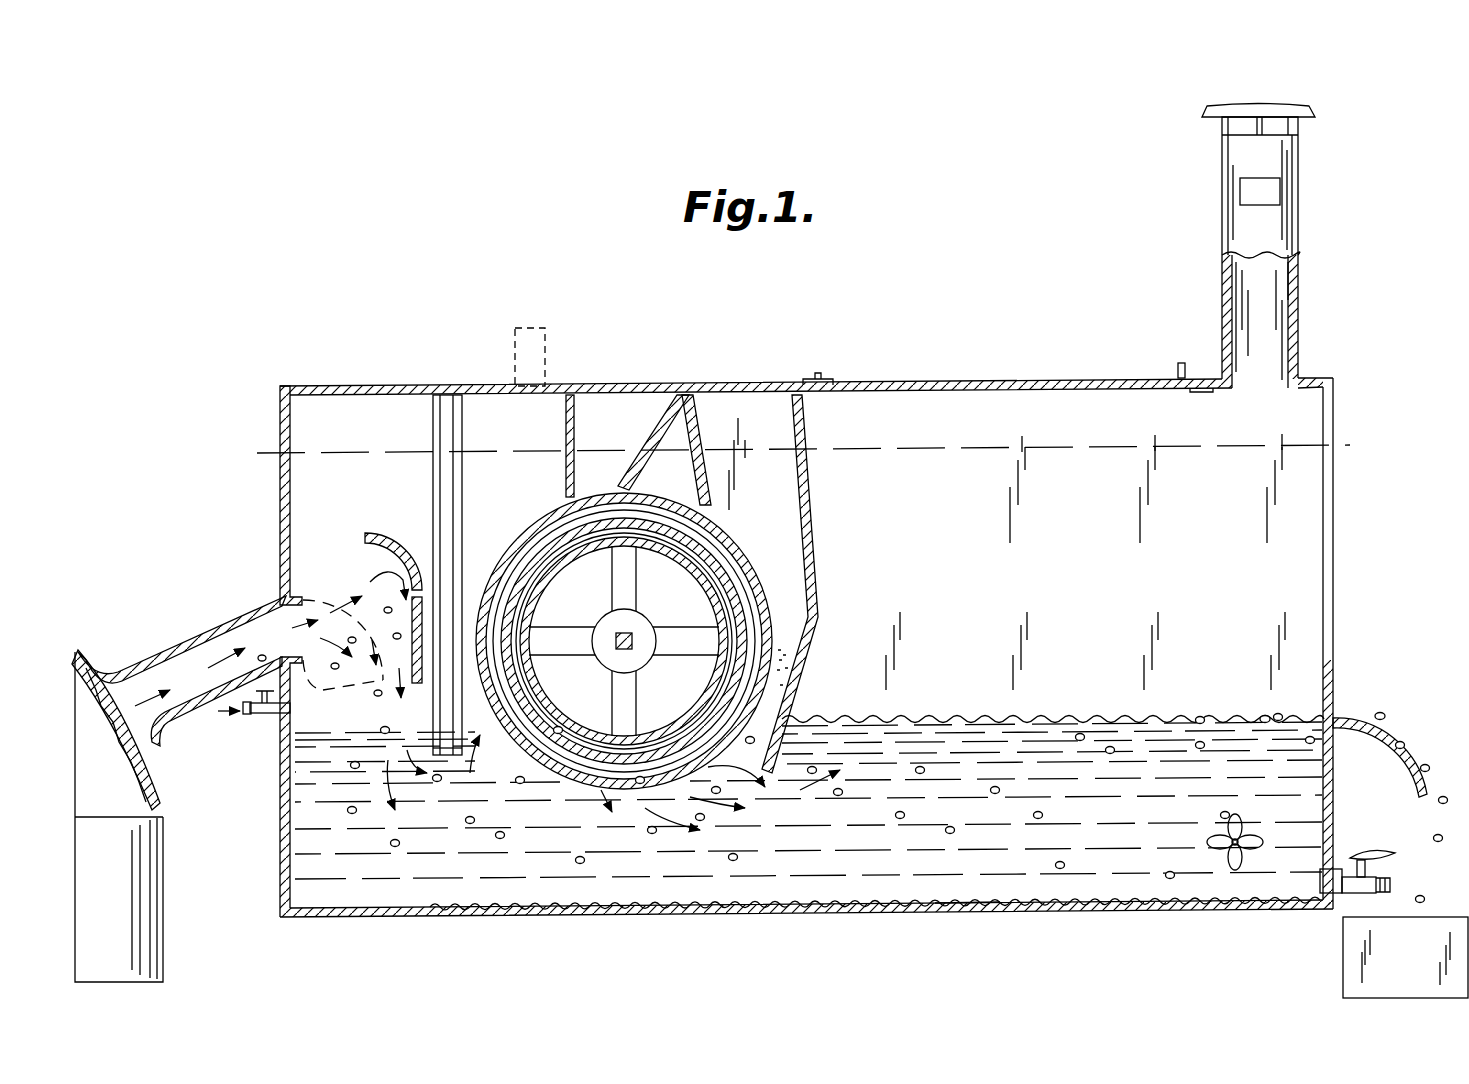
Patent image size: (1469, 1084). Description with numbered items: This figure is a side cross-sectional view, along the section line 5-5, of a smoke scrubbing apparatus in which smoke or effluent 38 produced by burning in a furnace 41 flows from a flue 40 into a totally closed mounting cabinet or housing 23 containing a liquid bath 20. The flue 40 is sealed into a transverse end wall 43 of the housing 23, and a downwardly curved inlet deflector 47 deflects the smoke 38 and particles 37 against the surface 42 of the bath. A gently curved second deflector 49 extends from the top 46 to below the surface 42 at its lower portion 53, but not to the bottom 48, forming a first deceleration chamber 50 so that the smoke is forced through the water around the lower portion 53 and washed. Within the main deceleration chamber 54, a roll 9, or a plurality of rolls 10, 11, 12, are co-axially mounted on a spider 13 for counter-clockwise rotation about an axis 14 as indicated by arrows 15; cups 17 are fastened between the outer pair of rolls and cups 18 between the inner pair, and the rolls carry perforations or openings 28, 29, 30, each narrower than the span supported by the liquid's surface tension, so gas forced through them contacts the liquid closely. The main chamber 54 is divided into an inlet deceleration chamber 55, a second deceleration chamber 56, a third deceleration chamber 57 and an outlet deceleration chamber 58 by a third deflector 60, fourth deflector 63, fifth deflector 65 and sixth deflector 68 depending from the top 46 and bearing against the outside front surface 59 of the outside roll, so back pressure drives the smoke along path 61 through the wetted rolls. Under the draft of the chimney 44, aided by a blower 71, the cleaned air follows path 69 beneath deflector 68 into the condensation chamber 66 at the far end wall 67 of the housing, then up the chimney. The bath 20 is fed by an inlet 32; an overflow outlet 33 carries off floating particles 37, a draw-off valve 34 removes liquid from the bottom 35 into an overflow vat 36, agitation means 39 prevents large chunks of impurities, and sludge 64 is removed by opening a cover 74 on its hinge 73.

The section line 5- 5 is at (257, 453).
The roll 9 is at (714, 588).
The roll 10 is at (638, 570).
The roll 11 is at (735, 548).
The roll 12 is at (726, 530).
The spider 13 is at (636, 610).
The axis 14 is at (617, 635).
The arrows 15 is at (557, 592).
The cups 17 is at (760, 620).
The cups 18 is at (756, 605).
The liquid bath 20 is at (839, 810).
The mounting cabinet or housing 23 is at (1010, 368).
The perforations or openings 28 is at (540, 677).
The perforations or openings 29 is at (672, 742).
The perforations or openings 30 is at (500, 566).
The inlet 32 is at (256, 718).
The overflow outlet 33 is at (1338, 717).
The draw-off valve 34 is at (1384, 880).
The bottom of the bath 35 is at (1116, 900).
The overflow vat 36 is at (1388, 964).
The floating particles 37 is at (1270, 716).
The smoke or effluent 38 is at (369, 604).
The agitation means 39 is at (1252, 838).
The flue 40 is at (160, 662).
The furnace 41 is at (91, 854).
The surface of the bath 42 is at (320, 730).
The transverse end wall 43 is at (282, 522).
The smoke outlet or chimney 44 is at (1299, 242).
The upper wall or top 46 is at (636, 385).
The inlet deflector 47 is at (376, 538).
The bottom 48 is at (428, 918).
The second deflector 49 is at (462, 482).
The first deceleration chamber 50 is at (338, 490).
The lower portion of second deflector 53 is at (448, 758).
The main deceleration chamber 54 is at (556, 378).
The receiving or inlet deceleration chamber 55 is at (513, 484).
The second deceleration chamber 56 is at (583, 434).
The third deceleration chamber 57 is at (690, 398).
The discharge or outlet deceleration chamber 58 is at (748, 492).
The outside front surface of the outside roll 59 is at (646, 492).
The third deflector 60 is at (566, 412).
The path 61 is at (612, 496).
The fourth deflector 63 is at (664, 420).
The sludge 64 is at (935, 912).
The fifth deflector 65 is at (697, 445).
The condensation chamber 66 is at (1046, 557).
The end wall 67 is at (1336, 545).
The sixth deflector 68 is at (812, 655).
The path of washed smoke 69 is at (1260, 360).
The blower 71 is at (1275, 192).
The hinge 73 is at (822, 378).
The cover 74 is at (1312, 113).